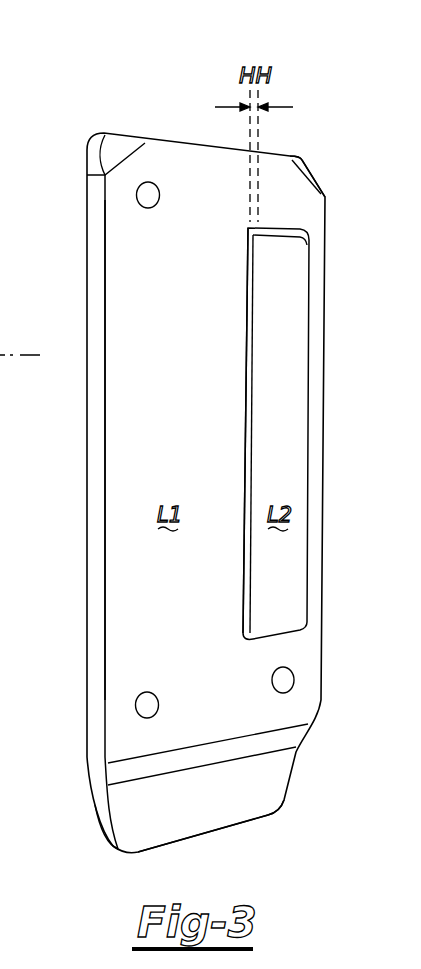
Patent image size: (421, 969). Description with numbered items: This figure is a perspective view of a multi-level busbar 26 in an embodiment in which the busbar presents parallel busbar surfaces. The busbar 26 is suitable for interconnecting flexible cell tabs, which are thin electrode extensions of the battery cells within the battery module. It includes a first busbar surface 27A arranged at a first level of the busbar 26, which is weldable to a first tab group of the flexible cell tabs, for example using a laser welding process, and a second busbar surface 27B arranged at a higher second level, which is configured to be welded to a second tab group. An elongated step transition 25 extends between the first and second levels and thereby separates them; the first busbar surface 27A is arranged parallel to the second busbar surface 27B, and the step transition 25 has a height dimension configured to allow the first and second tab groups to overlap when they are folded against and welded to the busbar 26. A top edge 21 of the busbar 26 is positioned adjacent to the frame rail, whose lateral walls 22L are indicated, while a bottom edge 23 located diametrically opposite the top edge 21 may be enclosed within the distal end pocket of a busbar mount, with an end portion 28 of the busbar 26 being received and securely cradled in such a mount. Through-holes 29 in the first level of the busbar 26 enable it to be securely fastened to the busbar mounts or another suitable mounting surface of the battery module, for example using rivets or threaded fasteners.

The top edge 21 is at (183, 140).
The lateral walls 22L is at (0, 421).
The bottom edge 23 is at (246, 834).
The elongated step transition 25 is at (243, 587).
The multi-level busbar 26 is at (320, 116).
The first busbar surface 27A is at (187, 463).
The second busbar surface 27B is at (289, 275).
The end portion 28 is at (135, 819).
The through-holes 29 is at (153, 204).